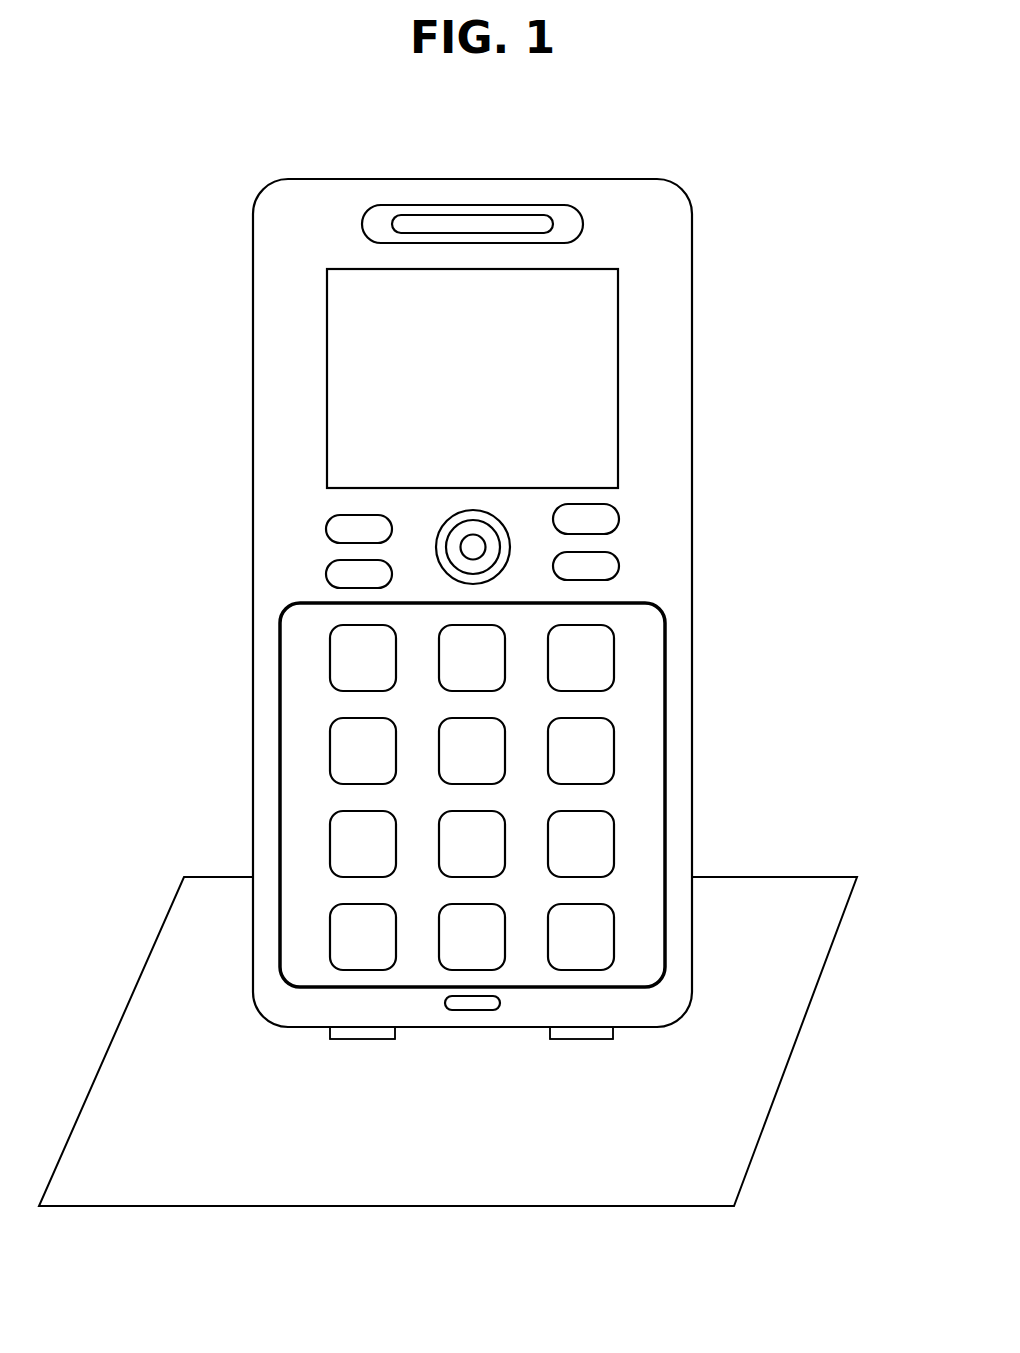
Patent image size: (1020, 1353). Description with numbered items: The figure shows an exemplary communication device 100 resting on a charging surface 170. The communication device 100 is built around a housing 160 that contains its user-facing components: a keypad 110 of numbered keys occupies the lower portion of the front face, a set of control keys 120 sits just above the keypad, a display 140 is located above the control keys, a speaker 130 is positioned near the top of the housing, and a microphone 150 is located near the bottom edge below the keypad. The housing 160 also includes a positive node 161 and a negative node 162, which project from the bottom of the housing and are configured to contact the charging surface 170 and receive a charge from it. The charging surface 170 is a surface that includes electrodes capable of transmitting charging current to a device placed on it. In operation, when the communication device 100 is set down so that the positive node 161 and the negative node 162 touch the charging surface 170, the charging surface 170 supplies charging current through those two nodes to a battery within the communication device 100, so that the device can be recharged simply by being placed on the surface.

The communication device 100 is at (212, 122).
The keypad 110 is at (421, 795).
The control keys 120 is at (712, 493).
The speaker 130 is at (472, 189).
The display 140 is at (480, 378).
The microphone 150 is at (497, 964).
The housing 160 is at (513, 609).
The positive node 161 is at (346, 1070).
The negative node 162 is at (565, 1070).
The charging surface 170 is at (461, 1003).